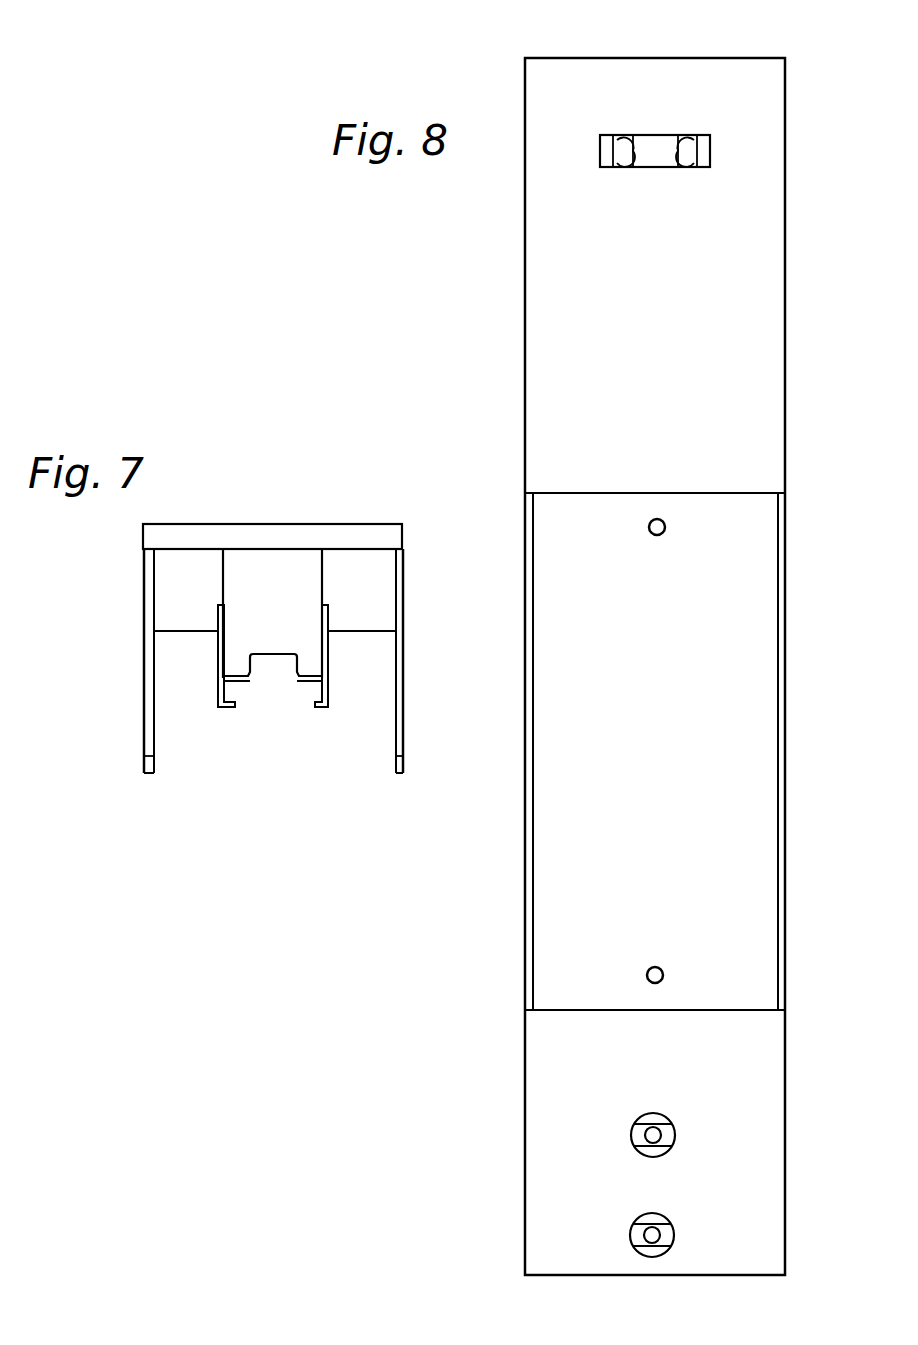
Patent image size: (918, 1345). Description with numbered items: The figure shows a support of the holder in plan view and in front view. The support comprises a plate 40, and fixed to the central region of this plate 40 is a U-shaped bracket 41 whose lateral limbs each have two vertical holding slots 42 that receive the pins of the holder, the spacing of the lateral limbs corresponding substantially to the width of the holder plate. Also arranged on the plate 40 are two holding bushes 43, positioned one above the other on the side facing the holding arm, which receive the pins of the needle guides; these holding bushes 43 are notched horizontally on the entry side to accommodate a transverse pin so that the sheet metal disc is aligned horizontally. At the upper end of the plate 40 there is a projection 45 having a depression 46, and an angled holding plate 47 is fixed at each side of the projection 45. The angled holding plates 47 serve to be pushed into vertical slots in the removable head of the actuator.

In FIG. 7, the plate 40 is at (257, 530).
In FIG. 8, the plate 40 is at (763, 137).
In FIG. 7, the U-shaped bracket 41 is at (398, 670).
In FIG. 8, the U-shaped bracket 41 is at (755, 670).
In FIG. 7, the vertical holding slots 42 is at (147, 762).
In FIG. 8, the holding bushes 43 is at (662, 1217).
In FIG. 7, the projection 45 is at (292, 582).
In FIG. 7, the depression 46 is at (273, 663).
In FIG. 8, the depression 46 is at (652, 143).
In FIG. 7, the angled holding plate 47 is at (330, 688).
In FIG. 8, the angled holding plate 47 is at (707, 155).